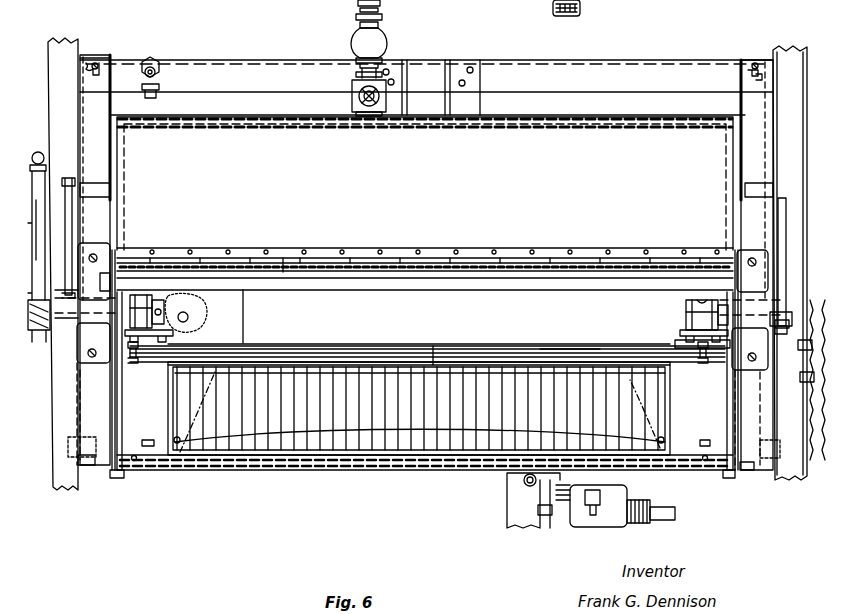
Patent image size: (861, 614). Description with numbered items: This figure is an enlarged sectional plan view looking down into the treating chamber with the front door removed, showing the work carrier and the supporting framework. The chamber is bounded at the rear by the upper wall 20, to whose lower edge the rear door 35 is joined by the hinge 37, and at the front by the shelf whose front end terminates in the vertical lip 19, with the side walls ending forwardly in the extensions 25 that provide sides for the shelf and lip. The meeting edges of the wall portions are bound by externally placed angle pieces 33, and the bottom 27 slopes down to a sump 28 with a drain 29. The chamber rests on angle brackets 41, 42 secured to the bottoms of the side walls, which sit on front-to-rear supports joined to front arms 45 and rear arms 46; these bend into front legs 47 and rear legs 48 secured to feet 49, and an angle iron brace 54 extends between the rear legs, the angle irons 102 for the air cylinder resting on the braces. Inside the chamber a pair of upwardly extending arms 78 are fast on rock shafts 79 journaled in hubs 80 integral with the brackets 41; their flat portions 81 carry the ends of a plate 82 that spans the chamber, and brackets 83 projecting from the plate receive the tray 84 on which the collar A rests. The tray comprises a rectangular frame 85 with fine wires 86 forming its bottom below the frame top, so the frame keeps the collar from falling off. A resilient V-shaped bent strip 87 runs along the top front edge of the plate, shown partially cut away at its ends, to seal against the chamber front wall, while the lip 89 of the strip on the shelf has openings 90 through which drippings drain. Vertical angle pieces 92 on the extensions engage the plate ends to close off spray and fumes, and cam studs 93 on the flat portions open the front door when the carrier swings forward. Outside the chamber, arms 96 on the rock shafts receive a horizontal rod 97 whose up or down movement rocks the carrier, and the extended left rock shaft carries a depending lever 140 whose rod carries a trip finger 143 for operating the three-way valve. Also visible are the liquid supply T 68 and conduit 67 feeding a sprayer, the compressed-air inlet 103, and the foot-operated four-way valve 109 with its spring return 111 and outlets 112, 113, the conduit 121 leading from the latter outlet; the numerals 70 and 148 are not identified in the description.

The vertical lip 19 is at (200, 470).
The upper wall 20 is at (384, 266).
The extension 25 is at (115, 437).
The bottom 27 is at (425, 380).
The sump 28 is at (198, 312).
The drain 29 is at (190, 318).
The angle pieces 33 is at (117, 267).
The rear door 35 is at (425, 183).
The hinge 37 is at (315, 250).
The angle bracket 41 is at (745, 265).
The angle bracket 42 is at (100, 248).
The front arms 45 is at (90, 427).
The rear arms 46 is at (94, 106).
The front legs 47 is at (82, 457).
The rear legs 48 is at (84, 57).
The feet 49 is at (57, 60).
The angle iron brace 54 is at (594, 80).
The conduit 67 is at (354, 96).
The T 68 is at (355, 80).
The nut 70 is at (150, 70).
The arms 78 is at (144, 297).
The rock shaft 79 is at (172, 292).
The hub 80 is at (75, 332).
The flat portion 81 is at (680, 342).
The plate 82 is at (368, 348).
The bracket 83 is at (172, 420).
The tray 84 is at (436, 364).
The rectangular frame 85 is at (300, 366).
The fine wires 86 is at (280, 440).
The bent strip 87 is at (560, 350).
The lip 89 is at (148, 443).
The openings 90 is at (134, 463).
The vertical angle pieces 92 is at (107, 377).
The cam studs 93 is at (143, 364).
The arms 96 is at (67, 232).
The horizontal rod 97 is at (92, 184).
The angle irons 102 is at (393, 72).
The inlet 103 is at (777, 397).
The four-way valve 109 is at (590, 527).
The spring return 111 is at (620, 520).
The outlet 112 is at (600, 502).
The outlet 113 is at (529, 8).
The conduit 121 is at (540, 507).
The lever 140 is at (38, 310).
The trip finger 143 is at (34, 152).
The rail member 148 is at (283, 270).
The collar A is at (483, 427).